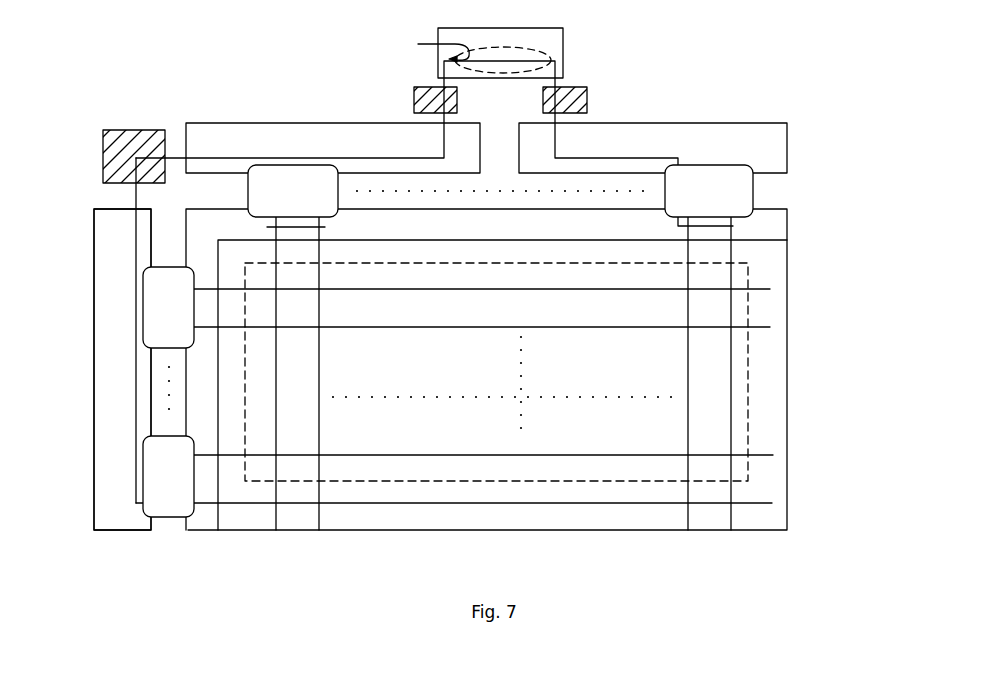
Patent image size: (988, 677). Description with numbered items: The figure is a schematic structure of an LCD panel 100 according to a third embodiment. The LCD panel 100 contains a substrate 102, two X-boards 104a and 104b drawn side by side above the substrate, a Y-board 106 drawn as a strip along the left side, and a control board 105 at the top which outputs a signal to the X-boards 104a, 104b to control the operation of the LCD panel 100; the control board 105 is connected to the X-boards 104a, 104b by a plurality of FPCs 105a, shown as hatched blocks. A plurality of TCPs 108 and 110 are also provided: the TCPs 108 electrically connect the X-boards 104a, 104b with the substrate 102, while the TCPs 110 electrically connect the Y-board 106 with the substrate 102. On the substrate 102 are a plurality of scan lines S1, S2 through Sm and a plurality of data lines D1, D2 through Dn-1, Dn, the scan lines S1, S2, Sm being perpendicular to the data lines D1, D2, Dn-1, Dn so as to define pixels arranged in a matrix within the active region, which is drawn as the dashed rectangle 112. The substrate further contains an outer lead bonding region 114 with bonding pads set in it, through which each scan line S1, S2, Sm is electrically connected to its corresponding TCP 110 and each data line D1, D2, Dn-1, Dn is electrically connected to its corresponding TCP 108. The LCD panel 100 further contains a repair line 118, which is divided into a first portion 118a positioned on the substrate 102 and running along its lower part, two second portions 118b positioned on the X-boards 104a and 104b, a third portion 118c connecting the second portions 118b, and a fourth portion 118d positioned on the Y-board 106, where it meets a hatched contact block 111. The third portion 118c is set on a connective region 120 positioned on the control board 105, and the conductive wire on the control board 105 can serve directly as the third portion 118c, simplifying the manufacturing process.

The LCD panel 100 is at (800, 90).
The substrate 102 is at (787, 412).
The X-board 104a is at (714, 150).
The X-board 104b is at (331, 150).
The control board 105 is at (563, 62).
The FPC 105a is at (414, 100).
The Y-board 106 is at (103, 410).
The TCP 108 is at (282, 202).
The TCP 110 is at (156, 319).
The contact pad 111 is at (135, 130).
The display region 112 is at (748, 383).
The outer lead bonding region 114 is at (775, 222).
The repair line 118 is at (422, 507).
The first portion 118a is at (588, 504).
The second portion 118b is at (289, 157).
The third portion 118c is at (423, 48).
The fourth portion 118d is at (136, 357).
The connective region 120 is at (545, 51).
The scan line S1 is at (770, 289).
The scan line S2 is at (770, 327).
The scan line Sm is at (773, 455).
The data line D1 is at (276, 532).
The data line D2 is at (320, 532).
The data line Dn-1 is at (688, 532).
The data line Dn is at (732, 532).